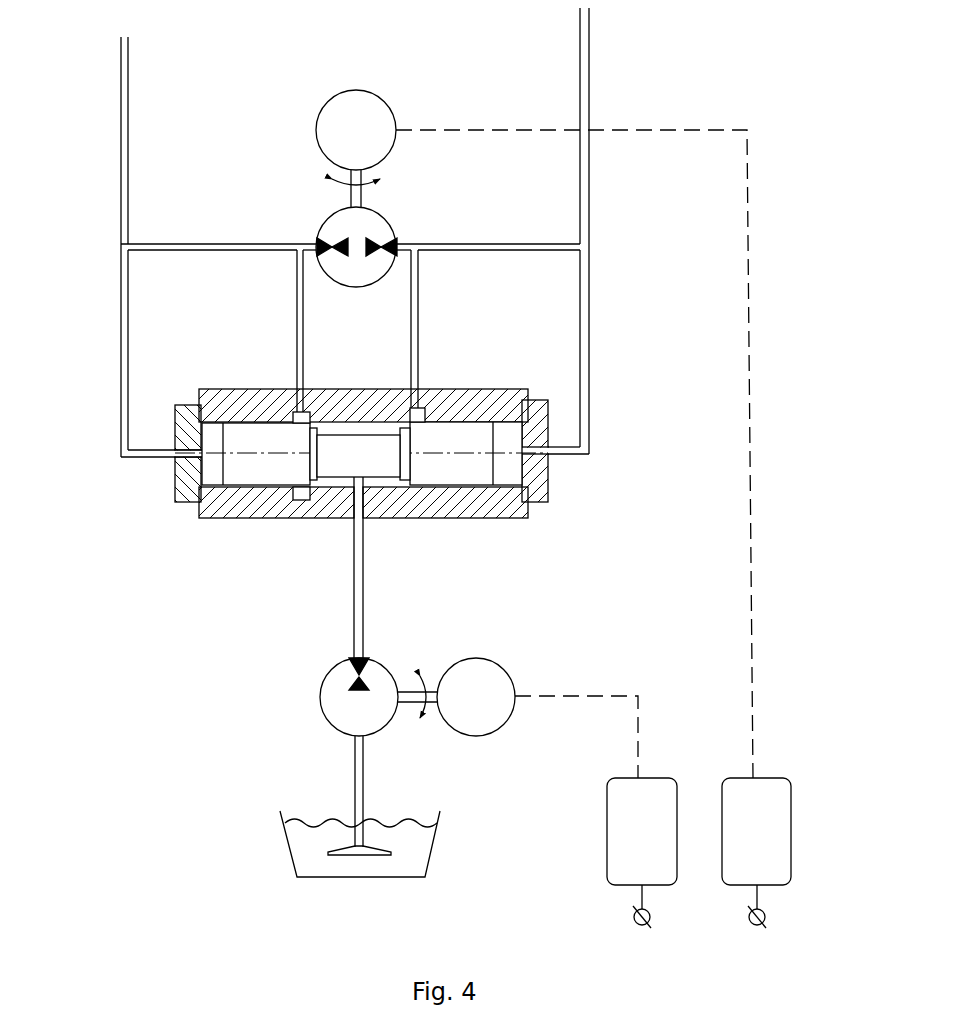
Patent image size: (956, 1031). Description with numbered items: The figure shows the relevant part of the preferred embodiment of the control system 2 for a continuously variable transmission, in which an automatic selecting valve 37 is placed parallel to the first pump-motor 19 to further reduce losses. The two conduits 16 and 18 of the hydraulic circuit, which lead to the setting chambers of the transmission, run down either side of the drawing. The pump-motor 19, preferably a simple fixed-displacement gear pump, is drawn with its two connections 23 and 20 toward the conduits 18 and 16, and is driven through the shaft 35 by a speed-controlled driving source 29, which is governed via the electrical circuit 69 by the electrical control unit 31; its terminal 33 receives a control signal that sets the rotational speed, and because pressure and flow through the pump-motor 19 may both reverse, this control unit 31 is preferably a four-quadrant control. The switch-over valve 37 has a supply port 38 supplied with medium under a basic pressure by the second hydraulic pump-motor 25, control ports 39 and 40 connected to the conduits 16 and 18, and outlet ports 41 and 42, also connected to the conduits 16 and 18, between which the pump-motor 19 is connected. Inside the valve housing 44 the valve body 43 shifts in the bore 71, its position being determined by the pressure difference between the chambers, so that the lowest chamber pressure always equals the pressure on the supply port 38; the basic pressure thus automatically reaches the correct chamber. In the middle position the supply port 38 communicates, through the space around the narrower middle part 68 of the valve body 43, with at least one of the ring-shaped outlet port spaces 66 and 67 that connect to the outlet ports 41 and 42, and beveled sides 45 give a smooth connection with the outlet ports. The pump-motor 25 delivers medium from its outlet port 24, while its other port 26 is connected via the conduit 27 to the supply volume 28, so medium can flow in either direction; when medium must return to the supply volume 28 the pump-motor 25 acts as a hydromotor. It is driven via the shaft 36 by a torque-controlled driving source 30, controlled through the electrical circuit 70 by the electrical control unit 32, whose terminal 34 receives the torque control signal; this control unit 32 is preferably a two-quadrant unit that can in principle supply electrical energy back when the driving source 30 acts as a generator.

The control system 2 is at (90, 847).
The conduit 16 is at (589, 162).
The conduit 18 is at (121, 142).
The pump-motor 19 is at (370, 218).
The valve outlet 20 is at (399, 236).
The valve inlet 23 is at (314, 238).
The outlet port 24 is at (352, 652).
The second hydraulic pump-motor 25 is at (337, 702).
The port 26 is at (350, 742).
The conduit 27 is at (360, 768).
The supply volume 28 is at (308, 848).
The driving source 29 is at (335, 108).
The driving source 30 is at (487, 710).
The electrical control unit 31 is at (778, 787).
The electrical control unit 32 is at (662, 787).
The terminal 33 is at (766, 918).
The terminal 34 is at (633, 918).
The shaft 35 is at (352, 176).
The shaft 36 is at (428, 700).
The automatic selecting valve 37 is at (508, 348).
The supply port 38 is at (366, 524).
The control port 39 is at (553, 460).
The control port 40 is at (170, 462).
The outlet port 41 is at (421, 385).
The outlet port 42 is at (293, 386).
The valve body 43 is at (250, 470).
The valve housing 44 is at (215, 400).
The beveled sides 45 is at (400, 418).
The outlet port space 66 is at (472, 518).
The outlet port space 67 is at (297, 500).
The narrower middle part 68 is at (353, 466).
The electrical circuit 69 is at (750, 452).
The electrical circuit 70 is at (620, 687).
The bore 71 is at (190, 492).